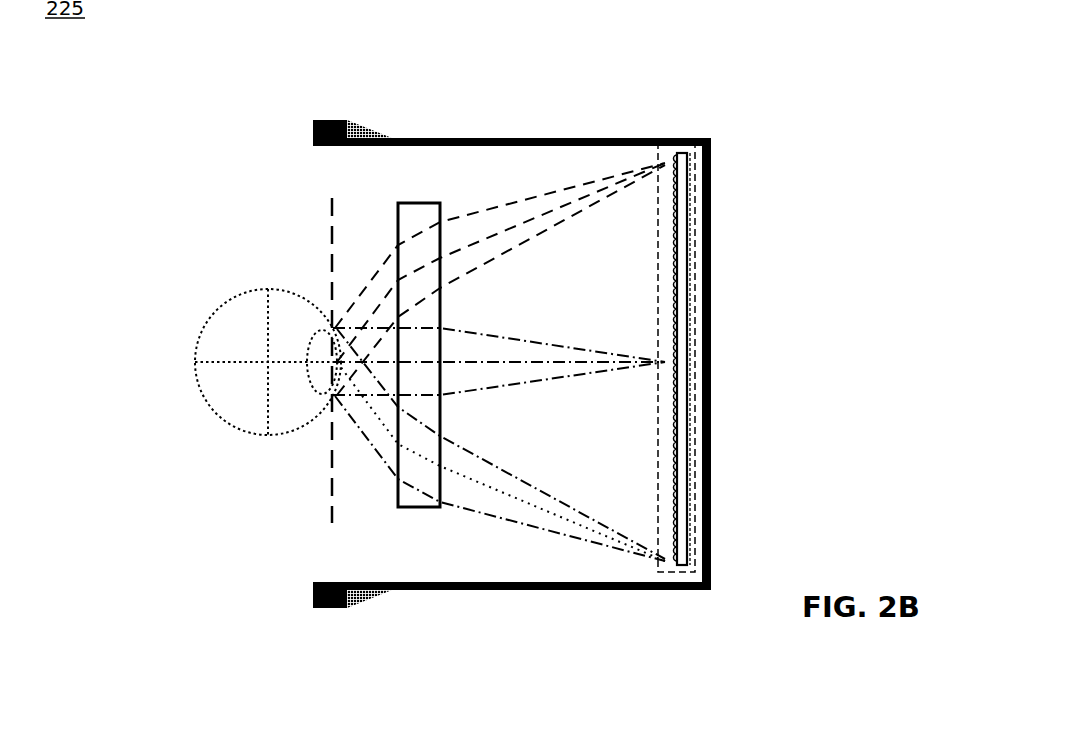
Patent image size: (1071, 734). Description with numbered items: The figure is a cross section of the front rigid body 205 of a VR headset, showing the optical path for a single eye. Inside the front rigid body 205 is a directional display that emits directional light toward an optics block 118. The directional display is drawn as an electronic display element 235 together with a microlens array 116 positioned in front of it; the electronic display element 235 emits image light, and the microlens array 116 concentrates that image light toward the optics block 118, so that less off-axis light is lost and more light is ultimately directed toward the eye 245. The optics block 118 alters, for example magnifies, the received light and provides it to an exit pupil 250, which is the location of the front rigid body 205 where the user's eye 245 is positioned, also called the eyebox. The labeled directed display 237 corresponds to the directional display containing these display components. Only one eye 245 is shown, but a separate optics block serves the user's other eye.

The front rigid body 205 is at (705, 138).
The directed display 237 is at (690, 294).
The electronic display element 235 is at (689, 168).
The microlens array 116 is at (672, 155).
The optics block 118 is at (396, 217).
The exit pupil 250 is at (323, 505).
The eye 245 is at (236, 299).